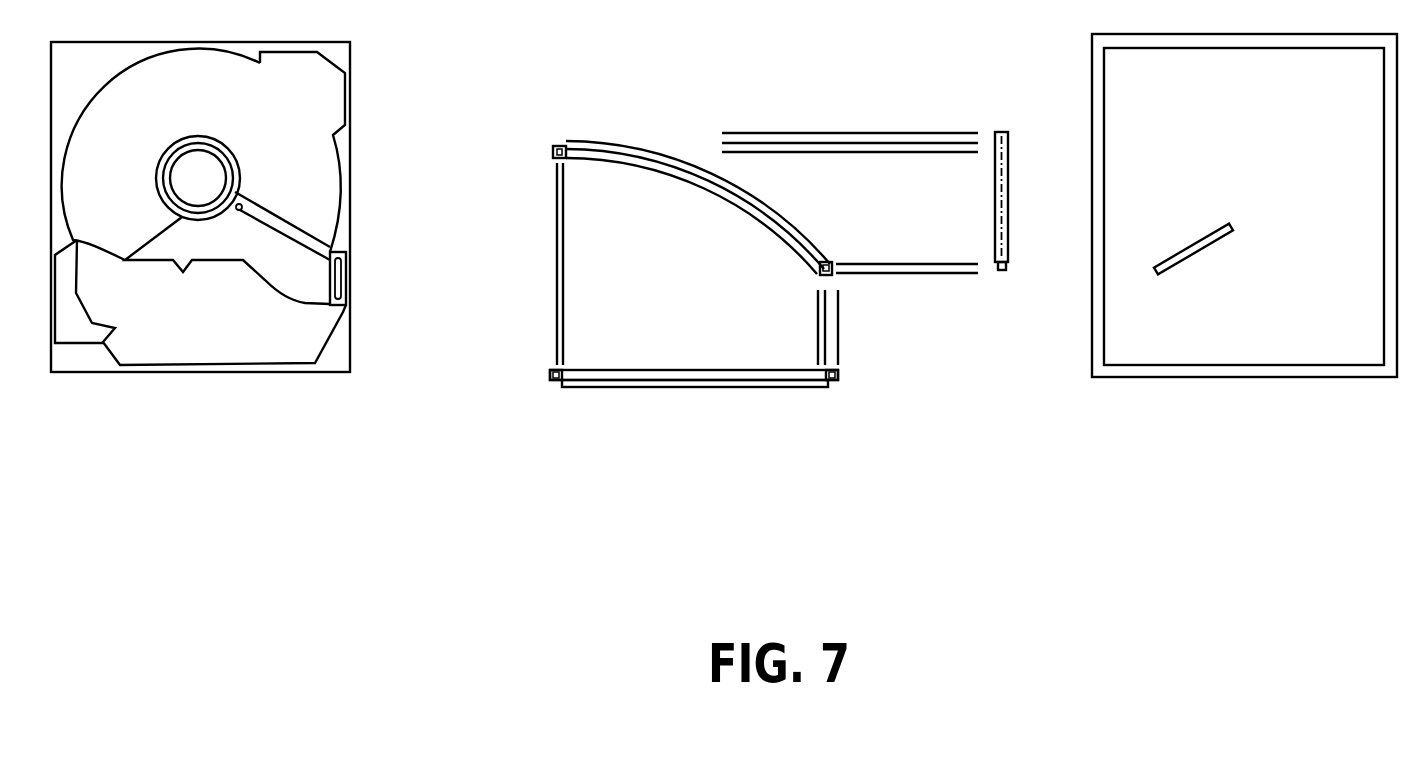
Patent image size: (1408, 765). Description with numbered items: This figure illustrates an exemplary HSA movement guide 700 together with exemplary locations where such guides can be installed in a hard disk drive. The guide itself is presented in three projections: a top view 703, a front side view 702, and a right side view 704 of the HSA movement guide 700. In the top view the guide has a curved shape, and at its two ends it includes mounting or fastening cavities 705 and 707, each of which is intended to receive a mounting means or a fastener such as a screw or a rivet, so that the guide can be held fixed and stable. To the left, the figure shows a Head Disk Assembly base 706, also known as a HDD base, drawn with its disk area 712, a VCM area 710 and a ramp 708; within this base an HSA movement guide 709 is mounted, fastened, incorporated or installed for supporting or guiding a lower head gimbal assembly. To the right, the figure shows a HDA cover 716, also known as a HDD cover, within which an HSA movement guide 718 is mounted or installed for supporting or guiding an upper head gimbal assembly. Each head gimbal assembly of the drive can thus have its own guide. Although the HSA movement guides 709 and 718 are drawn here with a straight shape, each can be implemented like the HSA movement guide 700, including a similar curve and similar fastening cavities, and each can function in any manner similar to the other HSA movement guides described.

The HSA movement guide 700 is at (673, 89).
The front side view 702 is at (797, 408).
The top view 703 is at (684, 173).
The right side view 704 is at (1045, 285).
The mounting or fastening cavity 705 is at (575, 169).
The Head Disk Assembly (HDA) base 706 is at (200, 228).
The mounting or fastening cavity 707 is at (808, 264).
The ramp 708 is at (330, 252).
The HSA movement guide 709 is at (282, 240).
The VCM area 710 is at (235, 330).
The disk area 712 is at (215, 120).
The HDA cover 716 is at (1244, 227).
The HSA movement guide 718 is at (1211, 257).